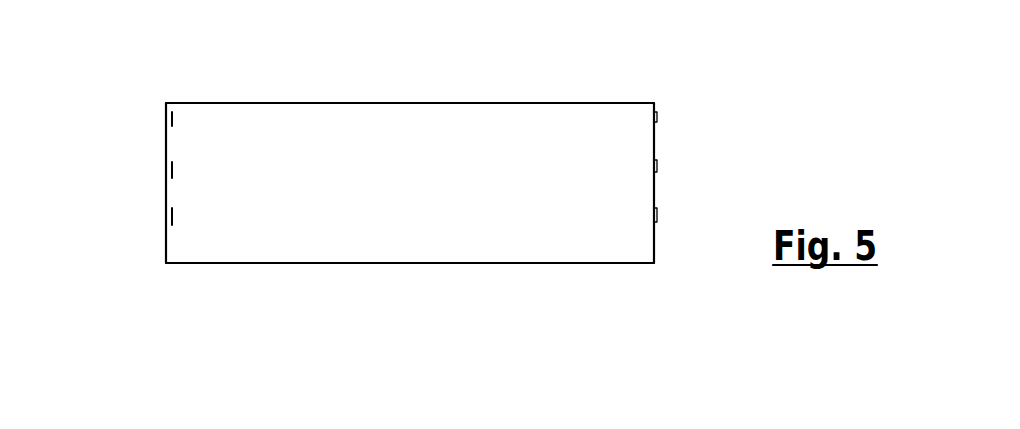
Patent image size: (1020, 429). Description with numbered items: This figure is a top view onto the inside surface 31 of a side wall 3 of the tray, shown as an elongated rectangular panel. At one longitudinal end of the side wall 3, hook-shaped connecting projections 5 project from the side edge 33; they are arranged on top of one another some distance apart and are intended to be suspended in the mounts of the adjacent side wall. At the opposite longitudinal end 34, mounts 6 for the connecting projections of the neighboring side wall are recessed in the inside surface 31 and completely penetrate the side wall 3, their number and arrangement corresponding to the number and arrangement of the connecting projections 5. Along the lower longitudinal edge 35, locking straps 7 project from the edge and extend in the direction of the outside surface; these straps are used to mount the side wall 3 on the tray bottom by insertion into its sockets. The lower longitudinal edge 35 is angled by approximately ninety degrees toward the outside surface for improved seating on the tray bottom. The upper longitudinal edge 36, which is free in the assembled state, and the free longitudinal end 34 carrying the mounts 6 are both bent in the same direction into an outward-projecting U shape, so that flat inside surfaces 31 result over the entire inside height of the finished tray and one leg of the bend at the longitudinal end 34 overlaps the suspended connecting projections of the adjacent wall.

The side wall 3 is at (555, 103).
The connecting projections 5 is at (655, 165).
The mounts 6 is at (166, 172).
The locking straps 7 is at (268, 258).
The inside surface 31 is at (391, 167).
The side edge 33 is at (655, 142).
The longitudinal end 34 is at (166, 150).
The lower longitudinal edge 35 is at (448, 263).
The longitudinal edge 36 is at (320, 103).